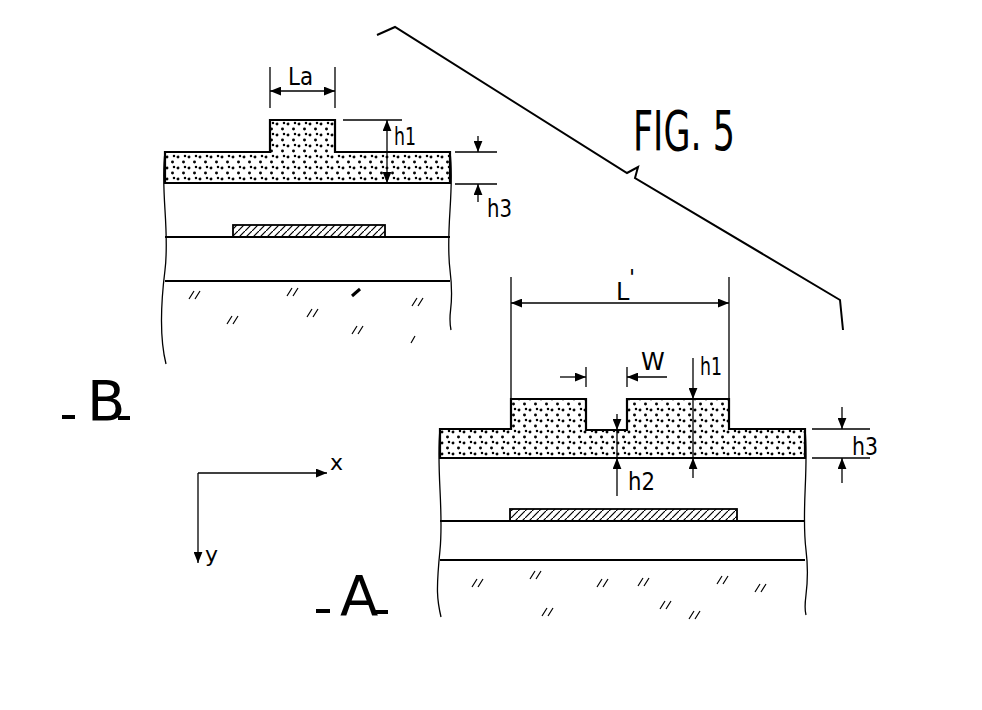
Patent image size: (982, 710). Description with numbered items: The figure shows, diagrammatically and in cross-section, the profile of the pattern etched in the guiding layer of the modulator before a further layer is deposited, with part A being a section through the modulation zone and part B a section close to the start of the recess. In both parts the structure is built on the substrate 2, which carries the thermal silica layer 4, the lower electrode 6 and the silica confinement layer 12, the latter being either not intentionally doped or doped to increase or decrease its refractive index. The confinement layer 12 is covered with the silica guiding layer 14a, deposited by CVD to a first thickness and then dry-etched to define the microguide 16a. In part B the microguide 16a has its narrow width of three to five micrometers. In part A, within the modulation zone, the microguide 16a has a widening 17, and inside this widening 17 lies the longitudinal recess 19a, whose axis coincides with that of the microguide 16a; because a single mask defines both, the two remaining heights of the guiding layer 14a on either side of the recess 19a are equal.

The substrate 2 is at (184, 322).
The thermal silica layer 4 is at (180, 258).
The lower electrode 6 is at (257, 226).
The silica confinement layer 12 is at (178, 212).
The silica guiding layer 14a is at (171, 168).
The microguide 16a is at (270, 132).
The widening 17 is at (731, 412).
The longitudinal recess 19a is at (605, 422).